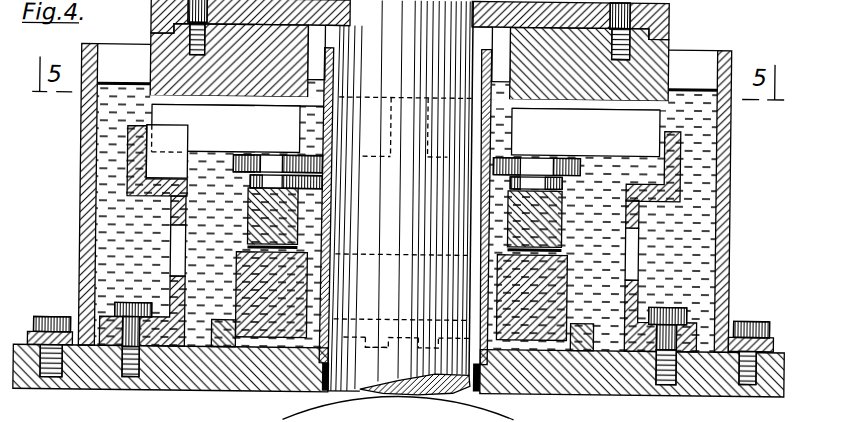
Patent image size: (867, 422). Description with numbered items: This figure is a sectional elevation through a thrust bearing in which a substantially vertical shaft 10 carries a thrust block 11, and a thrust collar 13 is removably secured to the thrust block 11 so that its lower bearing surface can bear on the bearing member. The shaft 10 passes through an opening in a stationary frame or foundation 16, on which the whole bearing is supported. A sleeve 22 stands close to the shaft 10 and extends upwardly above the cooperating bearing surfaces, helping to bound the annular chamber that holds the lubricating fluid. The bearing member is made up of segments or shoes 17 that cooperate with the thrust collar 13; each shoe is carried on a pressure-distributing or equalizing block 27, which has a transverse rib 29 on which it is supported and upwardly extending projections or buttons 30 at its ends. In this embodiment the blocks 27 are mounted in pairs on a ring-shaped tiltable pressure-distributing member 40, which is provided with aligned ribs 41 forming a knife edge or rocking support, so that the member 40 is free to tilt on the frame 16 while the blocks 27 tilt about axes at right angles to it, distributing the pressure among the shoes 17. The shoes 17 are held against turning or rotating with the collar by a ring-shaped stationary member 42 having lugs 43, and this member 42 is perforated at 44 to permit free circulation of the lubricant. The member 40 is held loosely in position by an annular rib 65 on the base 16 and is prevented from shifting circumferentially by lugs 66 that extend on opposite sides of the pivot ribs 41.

The shaft 10 is at (352, 366).
The thrust block 11 is at (663, 18).
The thrust collar 13 is at (667, 58).
The stationary frame or foundation 16 is at (570, 376).
The shoes 17 is at (405, 148).
The sleeve 22 is at (329, 138).
The pressure-distributing or equalizing blocks 27 is at (245, 220).
The transverse rib 29 is at (247, 244).
The projections or buttons 30 is at (455, 183).
The tiltable pressure-distributing member 40 is at (568, 286).
The ribs 41 is at (407, 347).
The ring-shaped stationary member 42 is at (136, 160).
The lugs 43 is at (177, 146).
The perforations 44 is at (170, 263).
The annular rib 65 is at (224, 337).
The lugs 66 is at (389, 306).